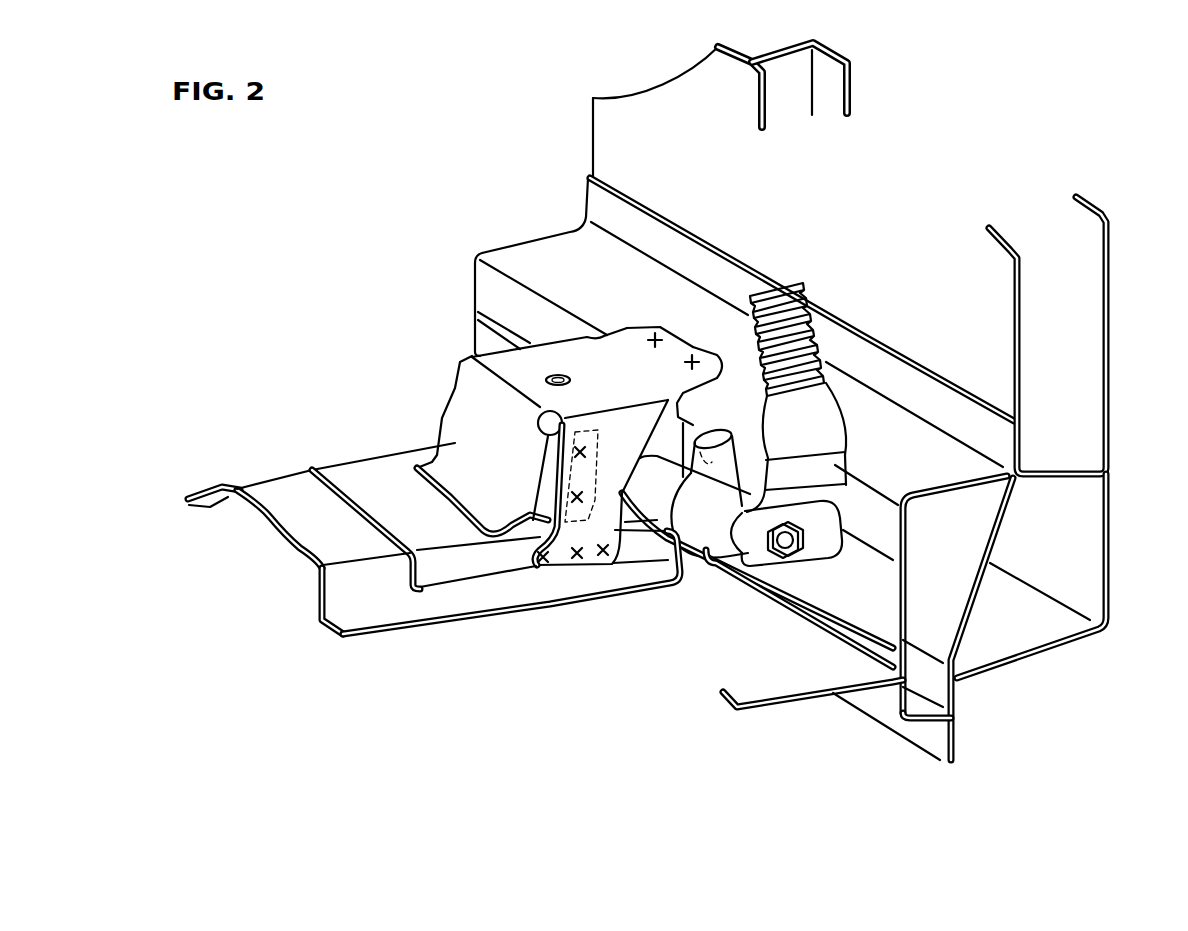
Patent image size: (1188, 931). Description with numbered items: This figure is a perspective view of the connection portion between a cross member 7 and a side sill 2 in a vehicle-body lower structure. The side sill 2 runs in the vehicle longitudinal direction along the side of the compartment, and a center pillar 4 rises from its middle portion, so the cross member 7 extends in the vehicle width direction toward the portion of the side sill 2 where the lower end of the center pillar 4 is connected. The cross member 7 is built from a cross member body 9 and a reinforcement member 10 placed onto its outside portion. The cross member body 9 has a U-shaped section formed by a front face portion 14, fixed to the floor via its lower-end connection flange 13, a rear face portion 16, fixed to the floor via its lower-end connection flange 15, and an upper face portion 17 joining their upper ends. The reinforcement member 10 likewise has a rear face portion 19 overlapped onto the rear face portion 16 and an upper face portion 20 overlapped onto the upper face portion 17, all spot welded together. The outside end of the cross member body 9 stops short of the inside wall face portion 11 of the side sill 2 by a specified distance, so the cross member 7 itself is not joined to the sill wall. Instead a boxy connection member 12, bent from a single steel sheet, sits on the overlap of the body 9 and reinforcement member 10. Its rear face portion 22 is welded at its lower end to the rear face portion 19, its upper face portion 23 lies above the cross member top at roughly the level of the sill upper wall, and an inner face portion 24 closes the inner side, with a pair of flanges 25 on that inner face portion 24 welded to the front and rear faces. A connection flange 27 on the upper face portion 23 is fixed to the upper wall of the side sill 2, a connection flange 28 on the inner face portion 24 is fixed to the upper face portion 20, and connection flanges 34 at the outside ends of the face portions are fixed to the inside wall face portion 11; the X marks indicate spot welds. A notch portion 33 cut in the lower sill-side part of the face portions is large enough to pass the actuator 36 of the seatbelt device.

The side sill 2 is at (1113, 578).
The center pillar 4 is at (661, 86).
The cross member 7 is at (427, 559).
The cross member body 9 is at (272, 466).
The reinforcement member 10 is at (364, 452).
The inside wall face portion 11 is at (486, 272).
The connection member 12 is at (553, 466).
The lower-end connection flange 13 is at (205, 491).
The front face portion 14 is at (232, 507).
The lower-end connection flange 15 is at (372, 620).
The rear face portion 16 is at (340, 606).
The upper face portion 17 is at (266, 532).
The rear face portion 19 is at (483, 563).
The upper face portion 20 is at (396, 468).
The rear face portion 22 is at (618, 424).
The upper face portion 23 is at (545, 355).
The inner face portion 24 is at (455, 405).
The flanges 25 is at (577, 540).
The connection flange 27 is at (646, 336).
The connection flange 28 is at (460, 500).
The notch portion 33 is at (640, 470).
The connection flanges 34 is at (694, 440).
The actuator 36 is at (718, 568).